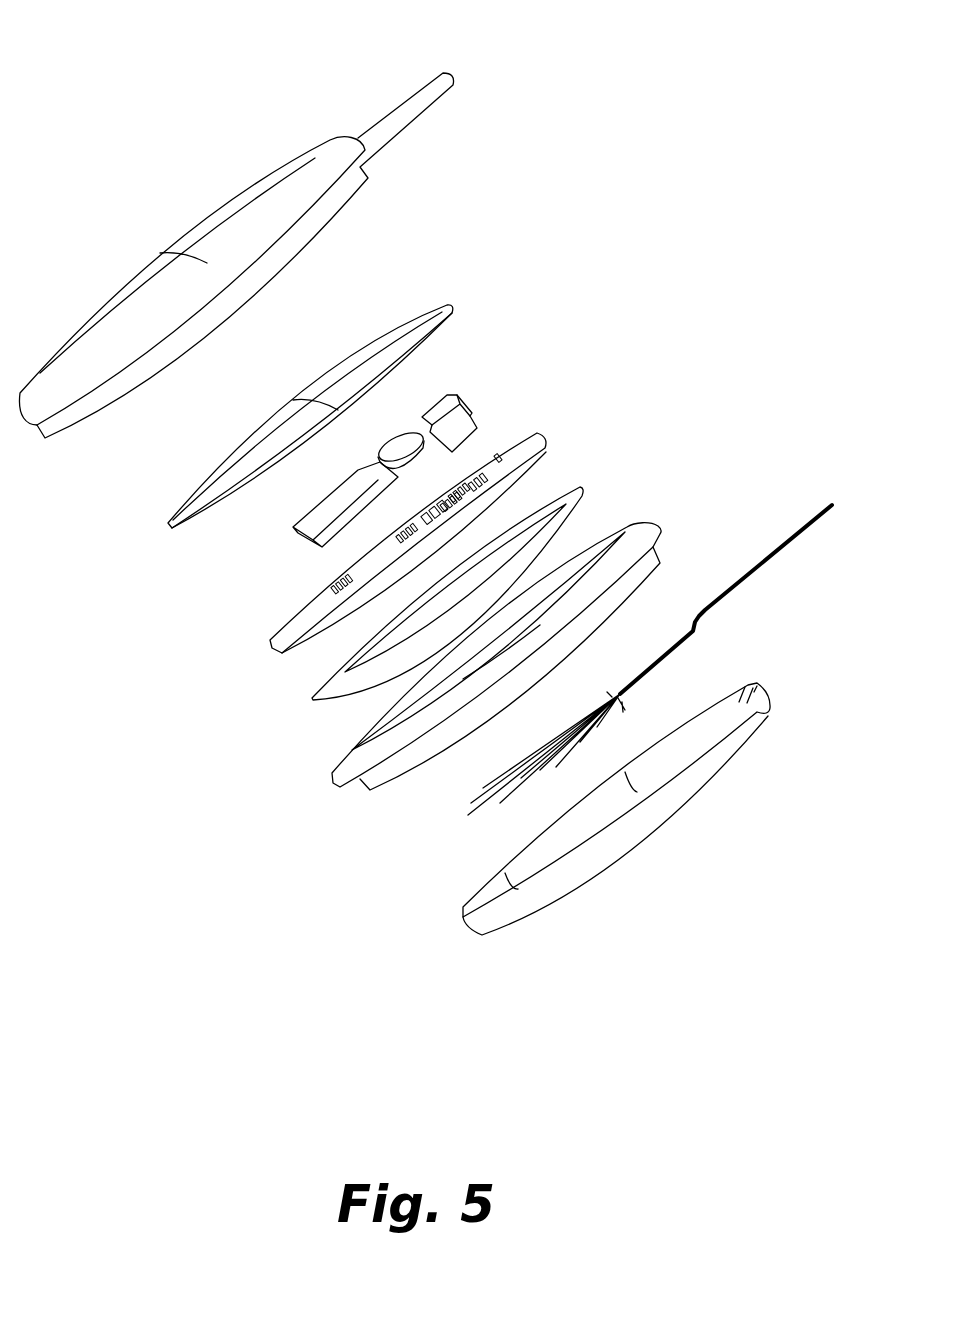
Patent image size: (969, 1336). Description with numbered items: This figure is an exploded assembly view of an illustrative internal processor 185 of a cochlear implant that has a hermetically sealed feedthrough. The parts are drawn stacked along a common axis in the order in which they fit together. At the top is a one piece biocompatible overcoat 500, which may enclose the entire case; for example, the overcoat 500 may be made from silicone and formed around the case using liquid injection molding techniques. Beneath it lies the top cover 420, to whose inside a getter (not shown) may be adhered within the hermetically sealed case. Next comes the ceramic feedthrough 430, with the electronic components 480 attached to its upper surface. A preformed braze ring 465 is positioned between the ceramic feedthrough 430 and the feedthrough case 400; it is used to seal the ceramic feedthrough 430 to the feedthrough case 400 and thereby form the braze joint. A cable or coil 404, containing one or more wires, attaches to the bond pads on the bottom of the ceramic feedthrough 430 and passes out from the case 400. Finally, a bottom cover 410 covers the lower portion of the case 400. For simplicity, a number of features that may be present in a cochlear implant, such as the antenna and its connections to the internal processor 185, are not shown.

The internal processor 185 is at (172, 102).
The biocompatible overcoat 500 is at (335, 140).
The top cover 420 is at (431, 320).
The electronic components 480 is at (467, 395).
The ceramic feedthrough 430 is at (544, 442).
The preformed braze ring 465 is at (575, 483).
The feedthrough case 400 is at (645, 538).
The cable or coil 404 is at (780, 547).
The bottom cover 410 is at (760, 708).